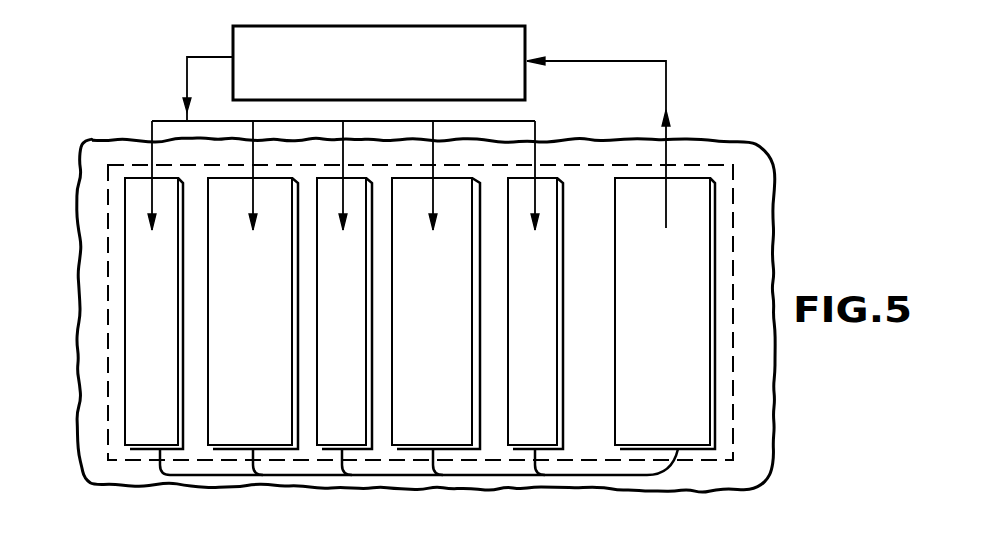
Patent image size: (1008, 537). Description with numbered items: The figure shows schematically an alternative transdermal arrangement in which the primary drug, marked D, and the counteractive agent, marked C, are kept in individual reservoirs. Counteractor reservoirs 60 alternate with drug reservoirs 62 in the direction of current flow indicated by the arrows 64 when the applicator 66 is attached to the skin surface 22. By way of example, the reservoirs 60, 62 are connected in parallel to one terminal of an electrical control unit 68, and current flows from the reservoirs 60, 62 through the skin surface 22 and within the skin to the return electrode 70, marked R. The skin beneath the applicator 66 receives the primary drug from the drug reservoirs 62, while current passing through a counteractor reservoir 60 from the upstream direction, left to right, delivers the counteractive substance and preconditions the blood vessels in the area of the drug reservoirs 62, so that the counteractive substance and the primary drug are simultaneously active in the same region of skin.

The skin surface 22 is at (768, 283).
The counteractor reservoir 60 is at (169, 411).
The drug reservoir 62 is at (265, 411).
The arrows 64 is at (655, 481).
The applicator 66 is at (735, 183).
The electrical control unit 68 is at (527, 37).
The return electrode 70 is at (679, 411).